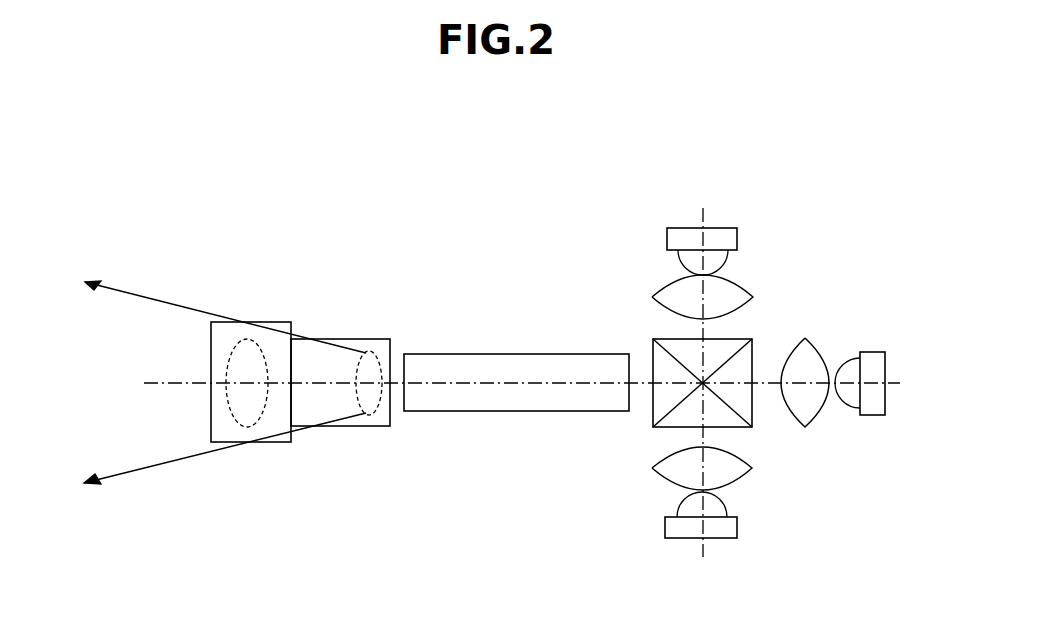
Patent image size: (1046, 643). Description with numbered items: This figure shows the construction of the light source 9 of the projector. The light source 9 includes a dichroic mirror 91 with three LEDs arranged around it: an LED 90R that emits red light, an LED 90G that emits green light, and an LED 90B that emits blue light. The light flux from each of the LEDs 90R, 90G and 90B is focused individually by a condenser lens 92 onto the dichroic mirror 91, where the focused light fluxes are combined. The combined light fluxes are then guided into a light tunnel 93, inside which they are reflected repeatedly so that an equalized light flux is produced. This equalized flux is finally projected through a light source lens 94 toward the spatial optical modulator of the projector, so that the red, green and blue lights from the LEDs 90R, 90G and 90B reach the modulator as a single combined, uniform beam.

The light source 9 is at (502, 222).
The LED 90R is at (737, 238).
The LED 90G is at (870, 352).
The LED 90B is at (737, 526).
The dichroic mirror 91 is at (737, 339).
The condenser lens 92 is at (742, 289).
The light tunnel 93 is at (550, 354).
The light source lens 94 is at (342, 338).